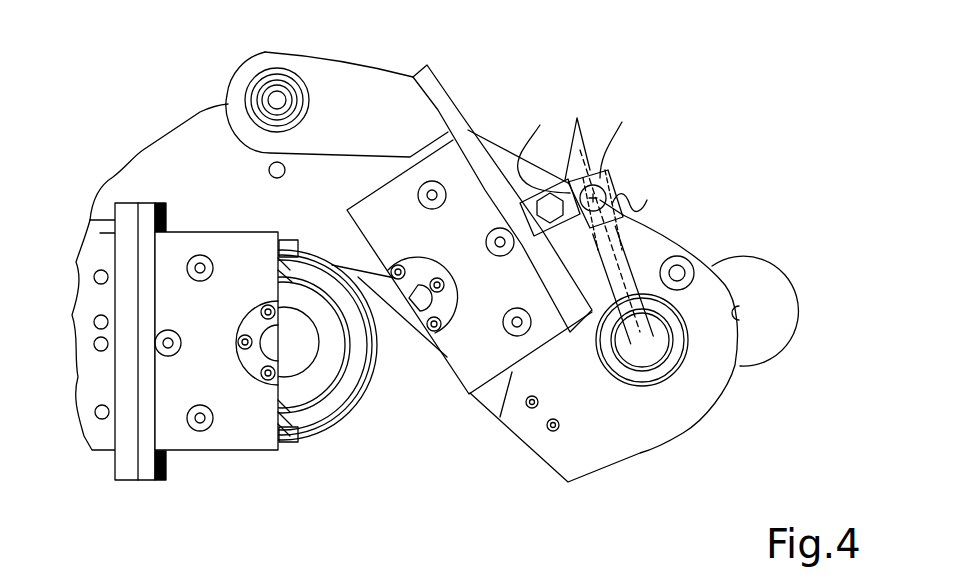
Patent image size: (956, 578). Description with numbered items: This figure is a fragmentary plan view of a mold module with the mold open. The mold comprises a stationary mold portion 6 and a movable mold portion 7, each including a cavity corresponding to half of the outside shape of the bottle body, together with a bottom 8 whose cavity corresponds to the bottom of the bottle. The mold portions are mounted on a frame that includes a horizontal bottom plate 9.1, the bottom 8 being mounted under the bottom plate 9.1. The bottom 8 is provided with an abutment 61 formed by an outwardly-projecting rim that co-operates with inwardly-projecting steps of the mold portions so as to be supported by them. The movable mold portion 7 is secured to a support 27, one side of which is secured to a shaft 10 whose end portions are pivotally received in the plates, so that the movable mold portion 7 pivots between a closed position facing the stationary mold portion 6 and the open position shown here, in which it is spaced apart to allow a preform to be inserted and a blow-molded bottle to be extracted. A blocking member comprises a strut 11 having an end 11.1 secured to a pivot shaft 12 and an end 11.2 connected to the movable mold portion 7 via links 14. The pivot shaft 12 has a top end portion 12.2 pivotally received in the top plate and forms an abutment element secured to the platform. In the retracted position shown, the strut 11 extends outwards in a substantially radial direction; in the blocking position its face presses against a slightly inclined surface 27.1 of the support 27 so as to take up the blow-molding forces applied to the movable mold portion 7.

The stationary mold portion 6 is at (192, 232).
The movable mold portion 7 is at (463, 188).
The bottom 8 is at (325, 397).
The abutment 61 is at (357, 393).
The bottom plate 9.1 is at (197, 135).
The shaft 10 is at (305, 93).
The support 27 is at (459, 118).
The surface 27.1 is at (532, 137).
The links 14 is at (584, 113).
The end 11.2 is at (662, 229).
The strut 11 is at (628, 265).
The end 11.1 is at (683, 256).
The pivot shaft 12 is at (683, 358).
The top end portion 12.2 is at (650, 347).